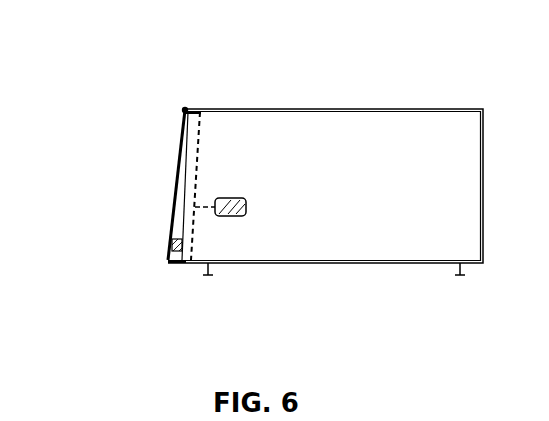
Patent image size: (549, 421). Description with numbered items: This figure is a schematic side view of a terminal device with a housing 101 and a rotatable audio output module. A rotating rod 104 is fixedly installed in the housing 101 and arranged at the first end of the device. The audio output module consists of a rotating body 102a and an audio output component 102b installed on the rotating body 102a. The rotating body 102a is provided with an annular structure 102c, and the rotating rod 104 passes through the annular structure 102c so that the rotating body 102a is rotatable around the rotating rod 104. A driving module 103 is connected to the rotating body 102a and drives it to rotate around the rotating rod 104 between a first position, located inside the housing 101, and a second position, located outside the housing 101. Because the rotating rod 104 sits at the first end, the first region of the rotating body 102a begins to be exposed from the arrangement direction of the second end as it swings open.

The housing 101 is at (312, 162).
The rotating body 102a is at (178, 211).
The audio output component 102b is at (170, 244).
The annular structure 102c is at (183, 107).
The driving module 103 is at (230, 217).
The rotating rod 104 is at (192, 103).